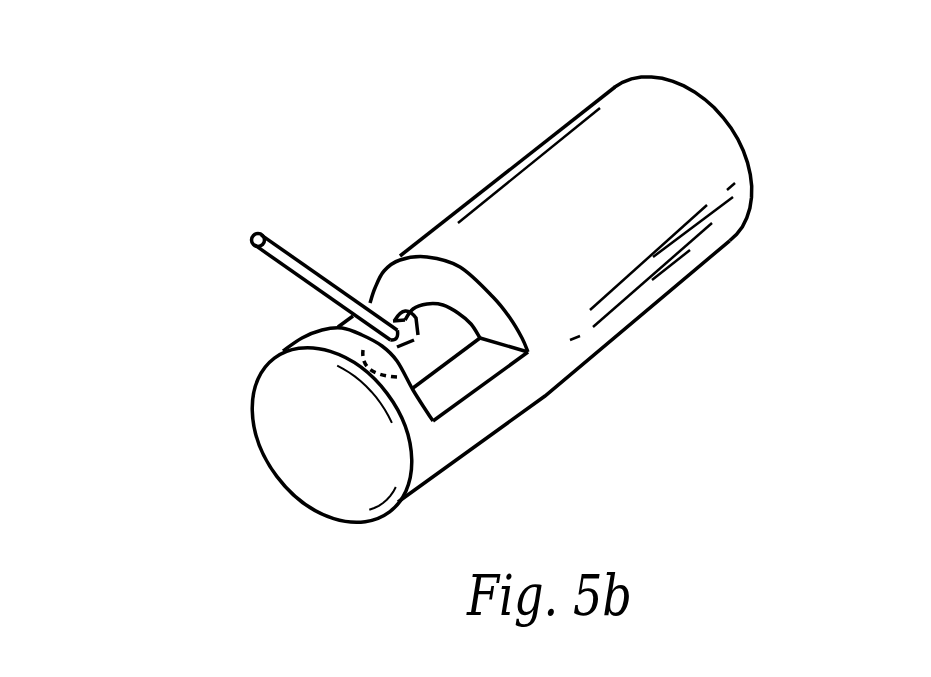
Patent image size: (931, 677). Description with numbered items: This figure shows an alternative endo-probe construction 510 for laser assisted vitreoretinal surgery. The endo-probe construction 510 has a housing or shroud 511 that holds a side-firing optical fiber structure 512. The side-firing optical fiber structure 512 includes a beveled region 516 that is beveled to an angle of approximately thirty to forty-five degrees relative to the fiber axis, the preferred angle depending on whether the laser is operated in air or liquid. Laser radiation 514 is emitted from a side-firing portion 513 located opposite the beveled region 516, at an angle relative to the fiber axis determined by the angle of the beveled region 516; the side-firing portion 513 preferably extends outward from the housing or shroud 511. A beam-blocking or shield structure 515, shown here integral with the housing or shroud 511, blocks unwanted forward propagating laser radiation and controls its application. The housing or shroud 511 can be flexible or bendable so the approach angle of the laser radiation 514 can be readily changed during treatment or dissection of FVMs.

The endo-probe construction 510 is at (178, 132).
The housing or shroud 511 is at (652, 257).
The side-firing optical fiber structure 512 is at (423, 362).
The side-firing portion 513 is at (422, 330).
The laser radiation 514 is at (254, 234).
The beam-blocking or shield structure 515 is at (303, 455).
The beveled region 516 is at (393, 377).